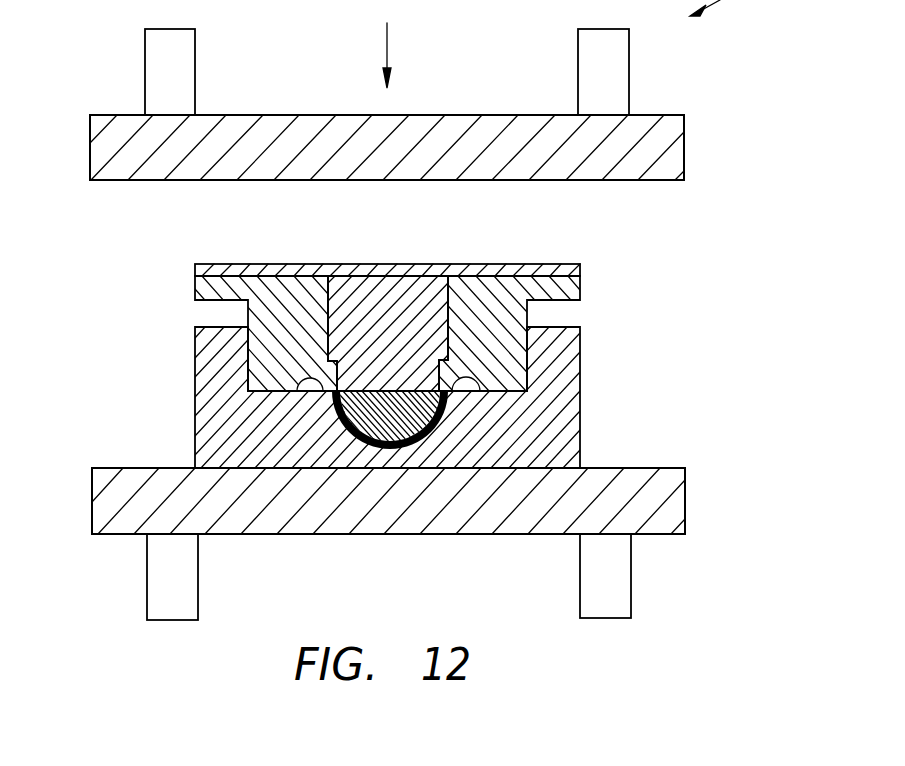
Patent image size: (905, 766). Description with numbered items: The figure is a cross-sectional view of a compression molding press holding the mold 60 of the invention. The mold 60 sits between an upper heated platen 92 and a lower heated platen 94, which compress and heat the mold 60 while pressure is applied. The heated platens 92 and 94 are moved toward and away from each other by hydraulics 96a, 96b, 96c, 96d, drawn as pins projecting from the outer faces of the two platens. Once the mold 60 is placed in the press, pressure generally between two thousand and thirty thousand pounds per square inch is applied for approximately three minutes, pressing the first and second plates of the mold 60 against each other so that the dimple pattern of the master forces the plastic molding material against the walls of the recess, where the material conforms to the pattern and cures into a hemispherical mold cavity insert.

The mold 60 is at (605, 307).
The heated platen 92 is at (660, 115).
The heated platen 94 is at (653, 468).
The hydraulics 96a is at (145, 72).
The hydraulics 96b is at (578, 70).
The hydraulics 96c is at (580, 580).
The hydraulics 96d is at (147, 583).